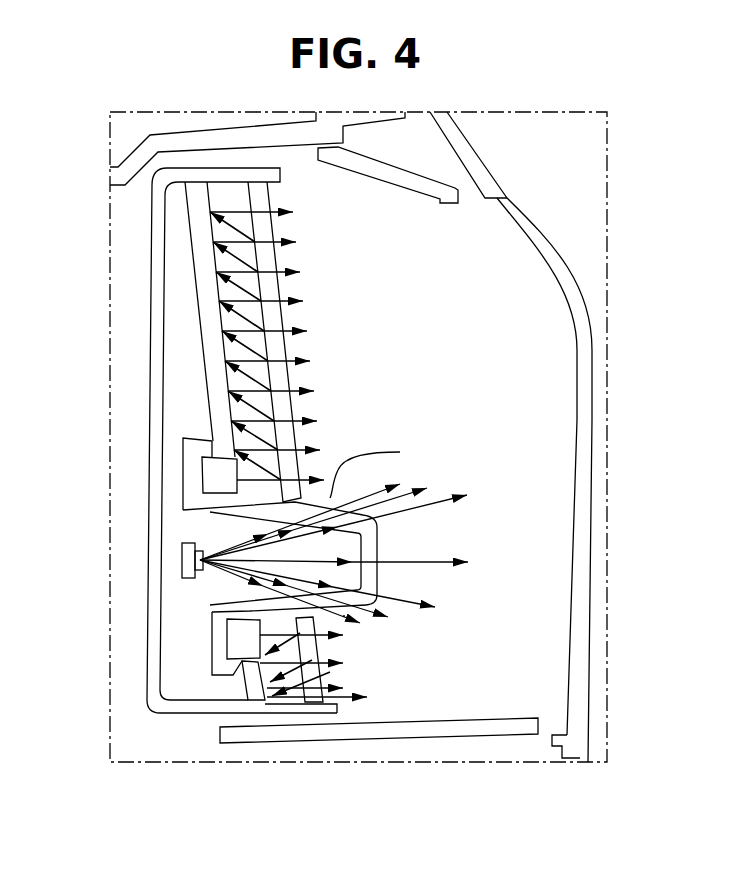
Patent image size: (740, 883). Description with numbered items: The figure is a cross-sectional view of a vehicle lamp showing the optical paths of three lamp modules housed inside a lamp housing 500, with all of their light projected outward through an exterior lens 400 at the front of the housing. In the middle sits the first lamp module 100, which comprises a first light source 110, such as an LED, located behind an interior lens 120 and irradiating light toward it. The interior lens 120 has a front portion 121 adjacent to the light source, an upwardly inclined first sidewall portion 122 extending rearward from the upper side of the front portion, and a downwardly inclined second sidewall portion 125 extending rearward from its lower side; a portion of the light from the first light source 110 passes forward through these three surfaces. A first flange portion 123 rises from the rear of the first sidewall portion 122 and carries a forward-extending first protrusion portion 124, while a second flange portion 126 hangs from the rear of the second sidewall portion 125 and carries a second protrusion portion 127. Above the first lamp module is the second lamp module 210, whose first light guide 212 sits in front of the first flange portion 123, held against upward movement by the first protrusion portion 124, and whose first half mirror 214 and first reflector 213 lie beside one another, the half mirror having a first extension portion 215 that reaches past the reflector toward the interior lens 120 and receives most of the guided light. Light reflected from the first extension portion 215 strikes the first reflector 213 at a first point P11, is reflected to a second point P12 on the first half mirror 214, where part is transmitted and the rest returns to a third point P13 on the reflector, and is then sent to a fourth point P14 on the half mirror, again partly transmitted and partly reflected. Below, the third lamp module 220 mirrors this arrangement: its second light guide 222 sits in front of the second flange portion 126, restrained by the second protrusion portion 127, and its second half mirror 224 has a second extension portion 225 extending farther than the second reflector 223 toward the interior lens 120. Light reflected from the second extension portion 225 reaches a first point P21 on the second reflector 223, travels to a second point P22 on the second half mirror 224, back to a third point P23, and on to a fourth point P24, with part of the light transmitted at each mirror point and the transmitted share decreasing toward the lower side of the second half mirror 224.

The first lamp module 100 is at (477, 549).
The first light source 110 is at (182, 560).
The interior lens 120 is at (403, 550).
The front portion 121 is at (366, 576).
The first sidewall portion 122 is at (350, 523).
The first flange portion 123 is at (190, 483).
The first protrusion portion 124 is at (197, 442).
The second sidewall portion 125 is at (407, 614).
The second flange portion 126 is at (218, 638).
The second protrusion portion 127 is at (228, 675).
The second lamp module 210 is at (316, 338).
The first light guide 212 is at (208, 470).
The first reflector 213 is at (205, 275).
The first half mirror 214 is at (260, 193).
The first extension portion 215 is at (386, 469).
The third lamp module 220 is at (410, 682).
The second light guide 222 is at (238, 622).
The second reflector 223 is at (258, 695).
The second half mirror 224 is at (314, 698).
The second extension portion 225 is at (343, 616).
The exterior lens 400 is at (578, 664).
The lamp housing 500 is at (158, 332).
The first point P11 is at (228, 457).
The second point P12 is at (284, 446).
The third point P13 is at (241, 455).
The fourth point P14 is at (278, 418).
The first point P21 is at (278, 652).
The second point P22 is at (345, 654).
The third point P23 is at (300, 660).
The fourth point P24 is at (318, 655).